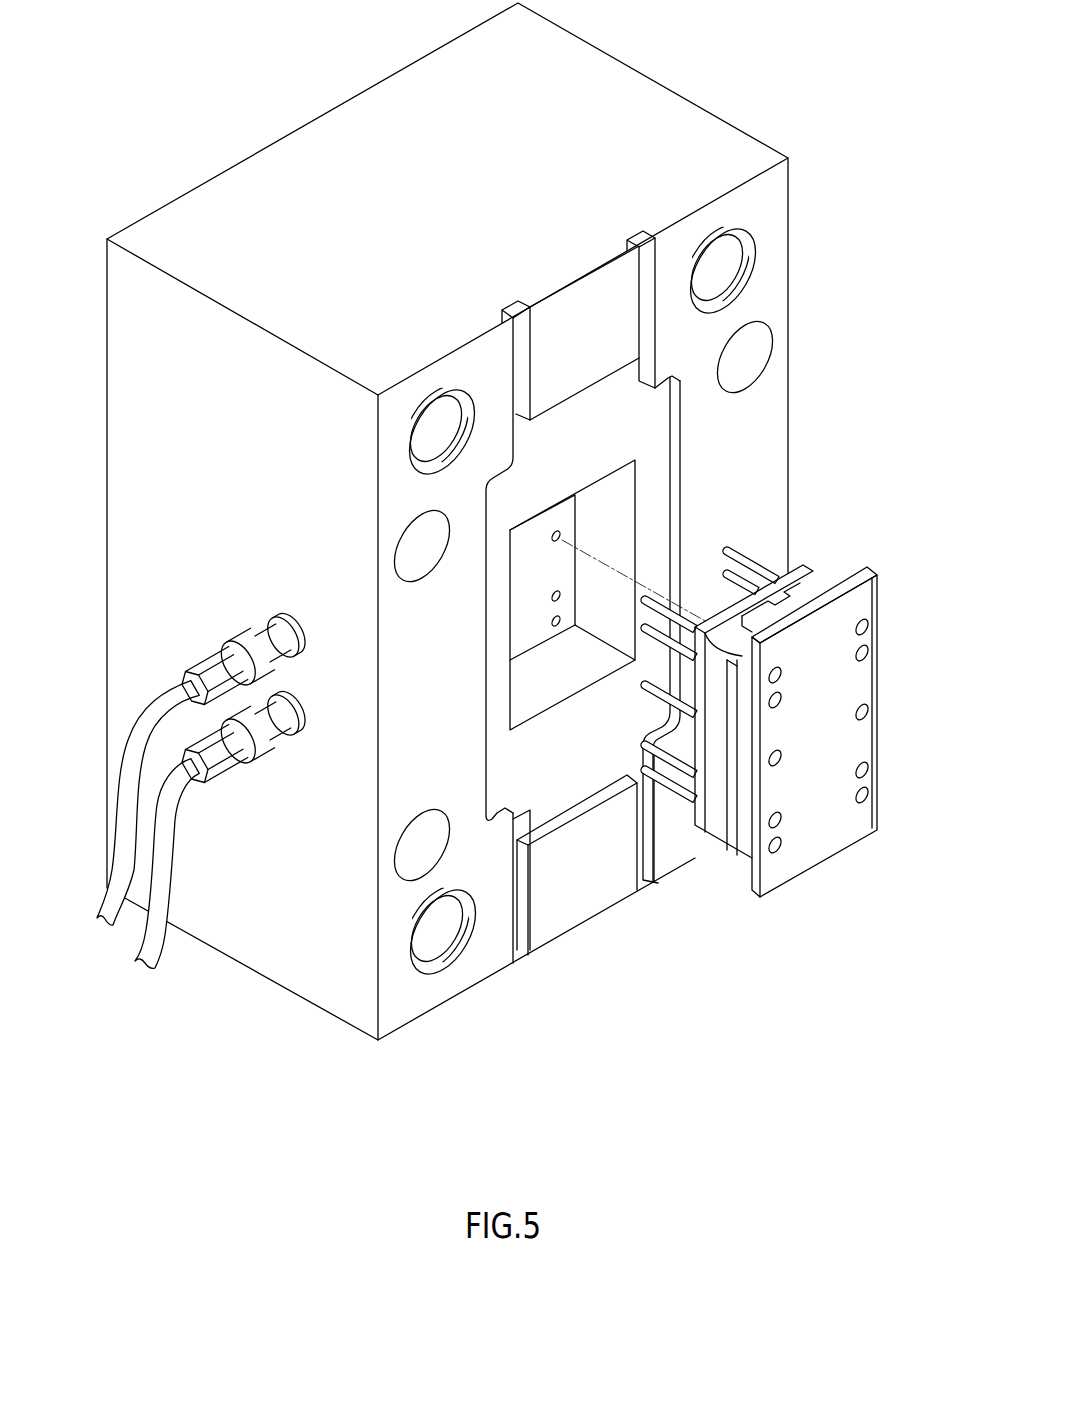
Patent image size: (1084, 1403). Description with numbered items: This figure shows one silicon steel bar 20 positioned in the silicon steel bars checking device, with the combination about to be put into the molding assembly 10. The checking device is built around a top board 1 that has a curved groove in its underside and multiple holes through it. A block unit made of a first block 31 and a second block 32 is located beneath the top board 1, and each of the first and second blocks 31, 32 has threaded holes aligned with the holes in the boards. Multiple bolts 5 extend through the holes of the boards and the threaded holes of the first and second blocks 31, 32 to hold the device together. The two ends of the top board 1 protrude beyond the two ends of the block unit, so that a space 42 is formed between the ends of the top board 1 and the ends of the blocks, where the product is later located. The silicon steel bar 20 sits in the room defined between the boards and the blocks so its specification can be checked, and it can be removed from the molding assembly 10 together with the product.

The molding assembly 10 is at (658, 103).
The bolts 5 is at (748, 553).
The silicon steel bar 20 is at (767, 602).
The first block 31 is at (820, 579).
The second block 32 is at (713, 832).
The top board 1 is at (798, 862).
The space 42 is at (850, 569).